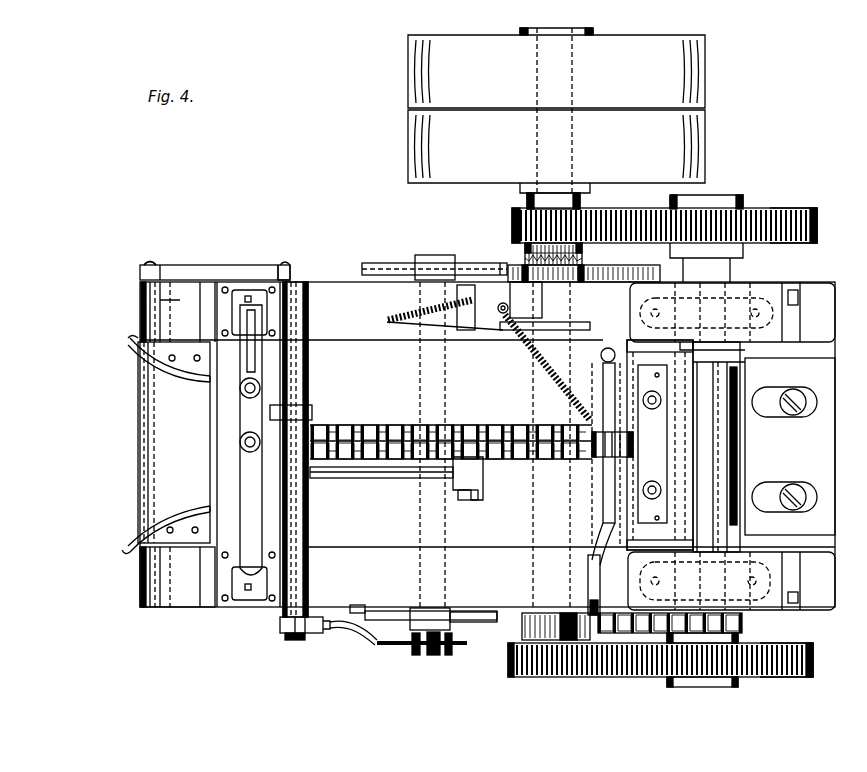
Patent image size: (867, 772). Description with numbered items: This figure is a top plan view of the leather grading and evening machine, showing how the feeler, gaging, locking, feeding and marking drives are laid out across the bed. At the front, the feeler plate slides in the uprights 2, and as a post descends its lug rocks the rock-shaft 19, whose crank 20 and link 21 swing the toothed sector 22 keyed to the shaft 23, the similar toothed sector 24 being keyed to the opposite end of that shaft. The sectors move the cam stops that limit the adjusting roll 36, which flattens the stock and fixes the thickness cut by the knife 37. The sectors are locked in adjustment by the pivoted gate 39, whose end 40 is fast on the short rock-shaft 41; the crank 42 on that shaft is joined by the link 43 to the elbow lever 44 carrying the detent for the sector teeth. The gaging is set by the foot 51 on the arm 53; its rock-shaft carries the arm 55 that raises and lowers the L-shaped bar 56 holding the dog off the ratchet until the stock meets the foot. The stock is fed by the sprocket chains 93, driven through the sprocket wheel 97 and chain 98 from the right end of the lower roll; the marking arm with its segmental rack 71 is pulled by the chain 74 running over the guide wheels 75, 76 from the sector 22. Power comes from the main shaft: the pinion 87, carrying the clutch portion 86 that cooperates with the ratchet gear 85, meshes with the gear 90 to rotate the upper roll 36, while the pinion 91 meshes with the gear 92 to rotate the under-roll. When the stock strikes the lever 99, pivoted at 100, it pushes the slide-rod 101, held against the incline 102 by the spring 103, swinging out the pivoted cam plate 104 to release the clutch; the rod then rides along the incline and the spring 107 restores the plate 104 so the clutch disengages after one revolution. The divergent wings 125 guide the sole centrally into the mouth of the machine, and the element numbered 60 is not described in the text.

The uprights 2 is at (244, 597).
The rock-shaft 19 is at (292, 641).
The crank 20 is at (280, 628).
The link 21 is at (350, 632).
The toothed sector 22 is at (467, 623).
The shaft 23 is at (425, 531).
The toothed sector 24 is at (362, 268).
The adjusting roll 36 is at (740, 435).
The knife 37 is at (792, 449).
The pivoted gate 39 is at (210, 472).
The gate end 40 is at (130, 340).
The short rock-shaft 41 is at (178, 312).
The crank 42 is at (140, 270).
The link 43 is at (215, 265).
The elbow lever 44 is at (285, 265).
The foot 51 is at (476, 486).
The arm 53 is at (348, 478).
The arm 55 is at (340, 605).
The L-shaped bar 56 is at (385, 611).
The rollers 60 is at (416, 655).
The segmental rack 71 is at (600, 478).
The chain 74 is at (600, 515).
The guide wheel 75 is at (588, 578).
The guide wheel 76 is at (592, 620).
The ratchet gear 85 is at (595, 272).
The clutch portion 86 is at (582, 255).
The pinion 87 is at (512, 228).
The gear 90 is at (817, 233).
The pinion 91 is at (508, 668).
The gear 92 is at (813, 672).
The sprocket chains 93 is at (345, 425).
The sprocket wheel 97 is at (742, 624).
The chain 98 is at (742, 630).
The lever 99 is at (640, 385).
The pivot 100 is at (603, 360).
The slide-rod 101 is at (508, 330).
The incline 102 is at (466, 330).
The spring 103 is at (420, 312).
The pivoted cam plate 104 is at (503, 303).
The spring 107 is at (540, 360).
The divergent wings 125 is at (172, 360).